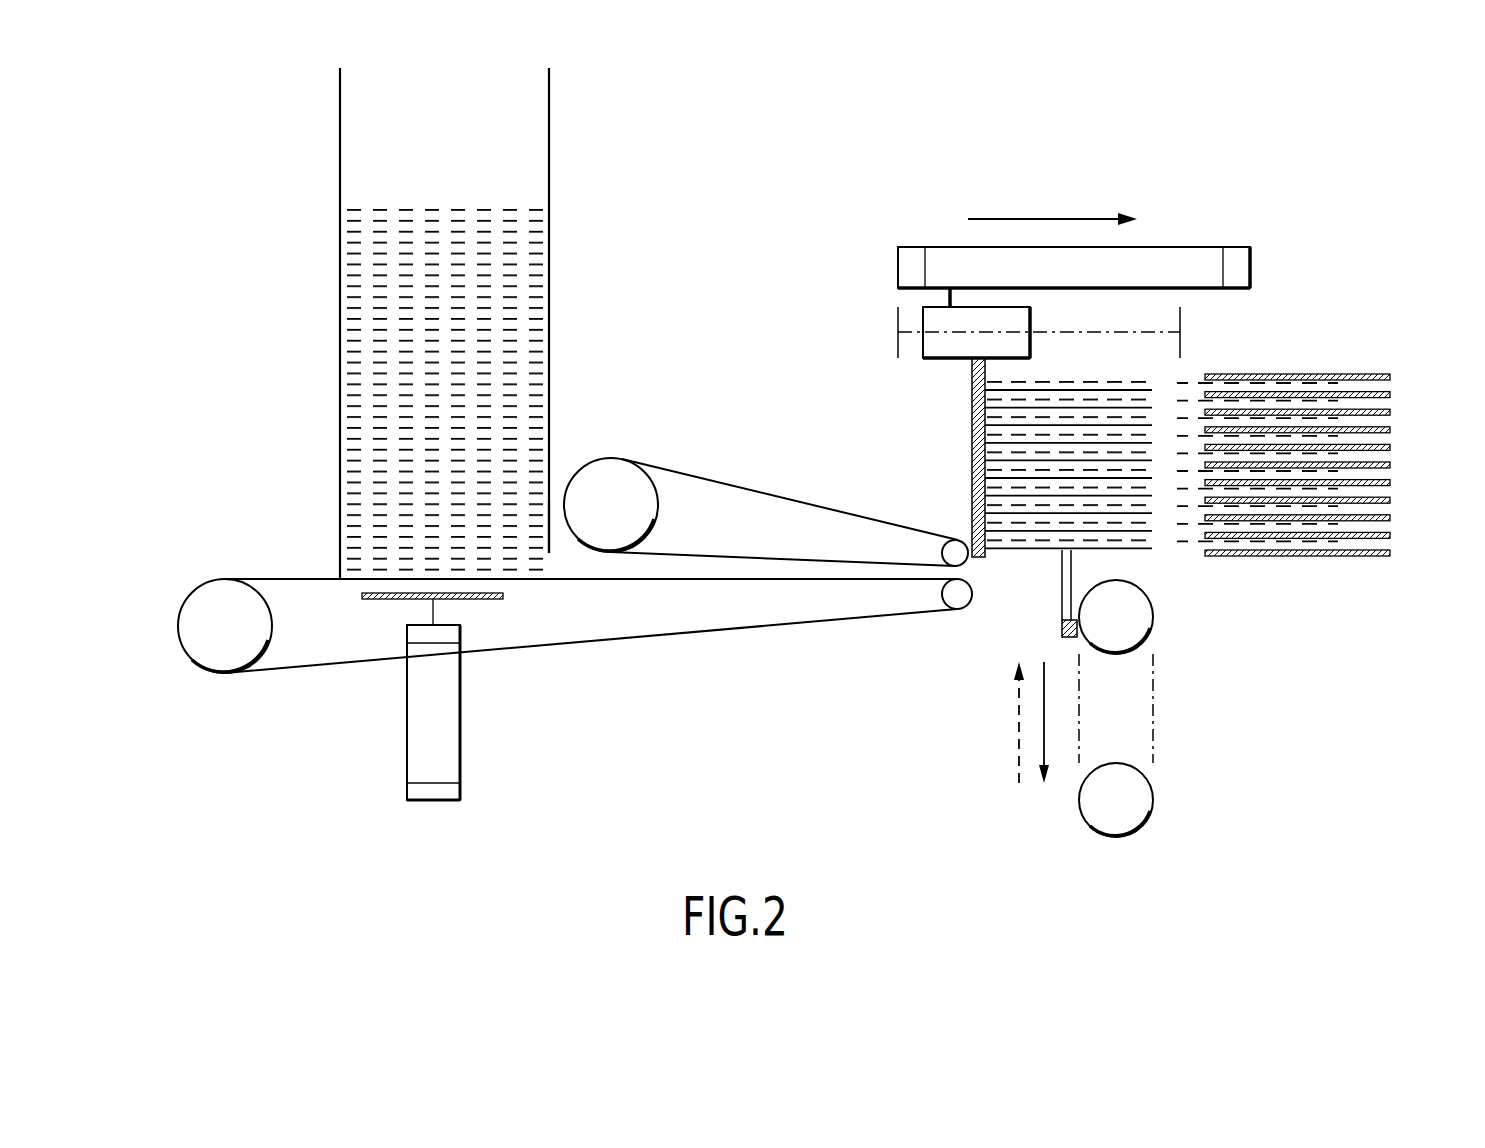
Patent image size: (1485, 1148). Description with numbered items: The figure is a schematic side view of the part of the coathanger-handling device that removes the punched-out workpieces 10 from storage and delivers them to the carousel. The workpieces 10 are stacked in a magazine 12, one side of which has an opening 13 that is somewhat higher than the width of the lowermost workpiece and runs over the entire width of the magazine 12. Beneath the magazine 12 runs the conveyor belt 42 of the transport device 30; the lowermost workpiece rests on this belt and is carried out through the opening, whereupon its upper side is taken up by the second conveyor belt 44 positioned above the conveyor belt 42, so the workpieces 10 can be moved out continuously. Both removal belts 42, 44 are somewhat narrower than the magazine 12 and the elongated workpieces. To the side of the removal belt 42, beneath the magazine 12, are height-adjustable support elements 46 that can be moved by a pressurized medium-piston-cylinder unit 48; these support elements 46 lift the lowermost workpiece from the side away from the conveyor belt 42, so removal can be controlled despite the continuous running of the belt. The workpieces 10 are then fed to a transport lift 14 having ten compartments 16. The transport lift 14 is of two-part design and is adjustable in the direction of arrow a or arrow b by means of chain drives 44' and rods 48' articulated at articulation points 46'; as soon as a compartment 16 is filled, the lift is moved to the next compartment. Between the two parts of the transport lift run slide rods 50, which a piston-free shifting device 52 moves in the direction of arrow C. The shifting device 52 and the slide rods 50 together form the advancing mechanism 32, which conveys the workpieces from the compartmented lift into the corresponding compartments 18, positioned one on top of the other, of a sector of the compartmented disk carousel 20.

The workpieces 10 is at (371, 210).
The magazine 12 is at (557, 240).
The opening 13 is at (546, 561).
The transport lift 14 is at (928, 437).
The compartments 16 is at (988, 452).
The compartments 18 is at (1387, 403).
The compartmented disk carousel 20 is at (1300, 358).
The transport device 30 is at (652, 642).
The advancing mechanism 32 is at (1185, 245).
The conveyor belt 42 is at (748, 627).
The second conveyor belt 44 is at (766, 481).
The chain drives 44' is at (1169, 708).
The support elements 46 is at (411, 671).
The articulation points 46' is at (1030, 618).
The pressurized medium-piston-cylinder unit 48 is at (456, 712).
The rods 48' is at (1031, 585).
The slide rods 50 is at (968, 378).
The shifting device 52 is at (942, 248).
The arrow c C is at (1052, 205).
The arrow a is at (1055, 722).
The arrow b is at (1006, 727).